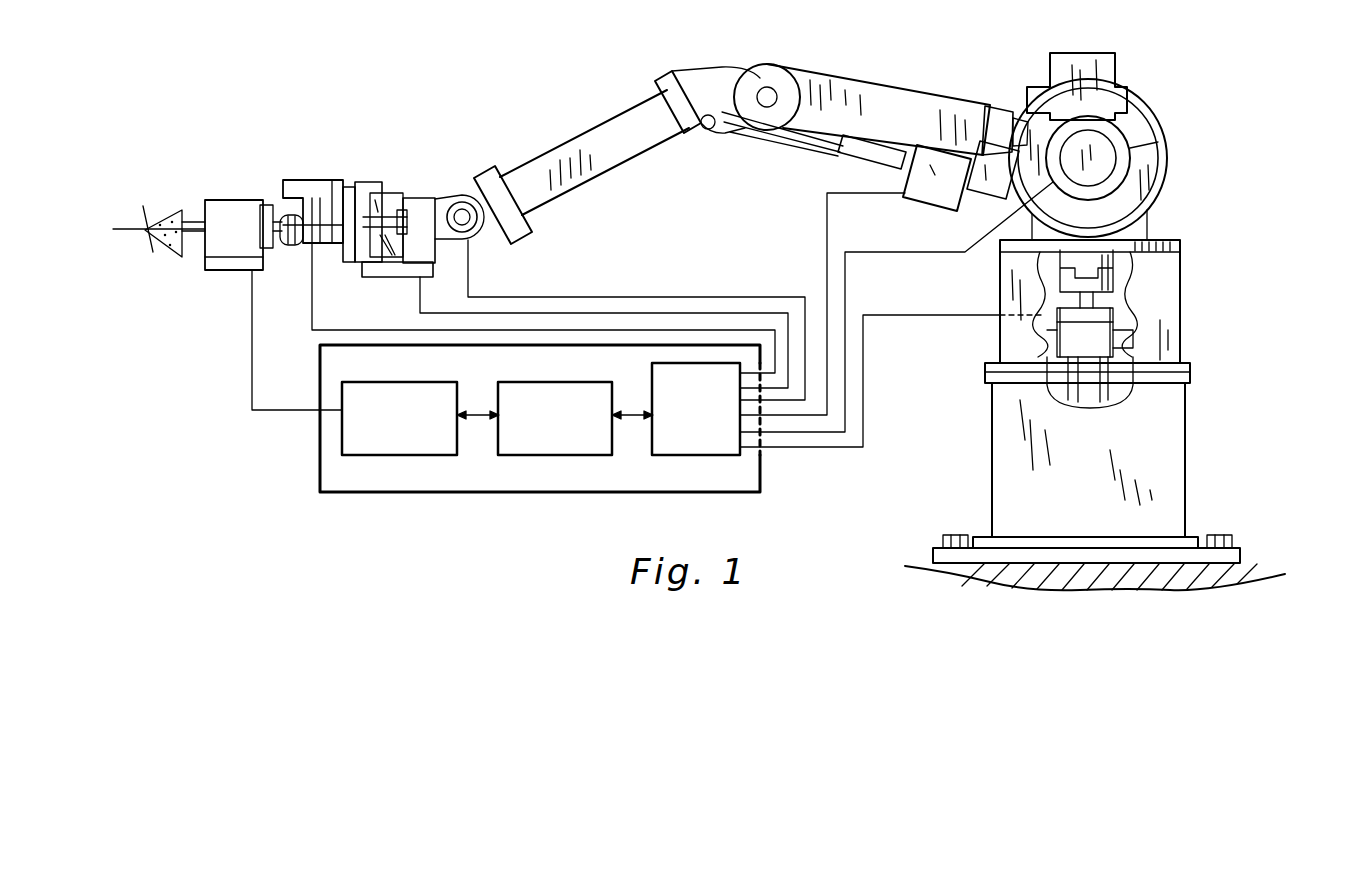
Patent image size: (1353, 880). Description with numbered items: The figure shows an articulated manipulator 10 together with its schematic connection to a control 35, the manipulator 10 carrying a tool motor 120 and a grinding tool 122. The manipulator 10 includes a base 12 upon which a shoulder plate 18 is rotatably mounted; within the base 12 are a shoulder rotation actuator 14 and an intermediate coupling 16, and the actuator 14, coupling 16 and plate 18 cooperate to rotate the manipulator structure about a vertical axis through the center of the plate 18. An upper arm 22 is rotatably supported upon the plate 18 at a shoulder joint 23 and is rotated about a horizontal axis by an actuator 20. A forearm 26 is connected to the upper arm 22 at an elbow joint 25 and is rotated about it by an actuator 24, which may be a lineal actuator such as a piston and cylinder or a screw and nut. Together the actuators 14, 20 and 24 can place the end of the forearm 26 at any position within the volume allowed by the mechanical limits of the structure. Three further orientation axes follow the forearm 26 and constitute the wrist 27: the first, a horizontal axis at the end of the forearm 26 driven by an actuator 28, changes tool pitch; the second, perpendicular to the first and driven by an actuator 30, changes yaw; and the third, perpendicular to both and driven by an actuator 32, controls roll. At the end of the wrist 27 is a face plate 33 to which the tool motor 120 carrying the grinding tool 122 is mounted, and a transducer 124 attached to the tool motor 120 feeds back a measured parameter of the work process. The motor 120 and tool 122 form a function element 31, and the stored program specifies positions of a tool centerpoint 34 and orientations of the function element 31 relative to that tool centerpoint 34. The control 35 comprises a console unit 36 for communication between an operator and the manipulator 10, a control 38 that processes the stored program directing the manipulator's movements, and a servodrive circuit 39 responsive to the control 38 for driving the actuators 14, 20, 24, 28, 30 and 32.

The articulated manipulator 10 is at (852, 54).
The base 12 is at (1186, 432).
The shoulder rotation actuator 14 is at (1115, 318).
The intermediate coupling 16 is at (1115, 280).
The shoulder plate 18 is at (1164, 241).
The actuator 20 is at (1167, 150).
The upper arm 22 is at (880, 82).
The shoulder joint 23 is at (1134, 82).
The actuator 24 is at (935, 212).
The elbow joint 25 is at (757, 60).
The forearm 26 is at (610, 166).
The wrist 27 is at (302, 165).
The actuator 28 is at (480, 244).
The actuator 30 is at (385, 176).
The function element 31 is at (178, 283).
The actuator 32 is at (292, 250).
The face plate 33 is at (264, 205).
The tool centerpoint 34 is at (150, 244).
The control 35 is at (592, 374).
The console unit 36 is at (428, 458).
The control 38 is at (585, 458).
The servodrive circuit 39 is at (686, 458).
The tool motor 120 is at (226, 200).
The grinding tool 122 is at (172, 210).
The transducer 124 is at (248, 270).